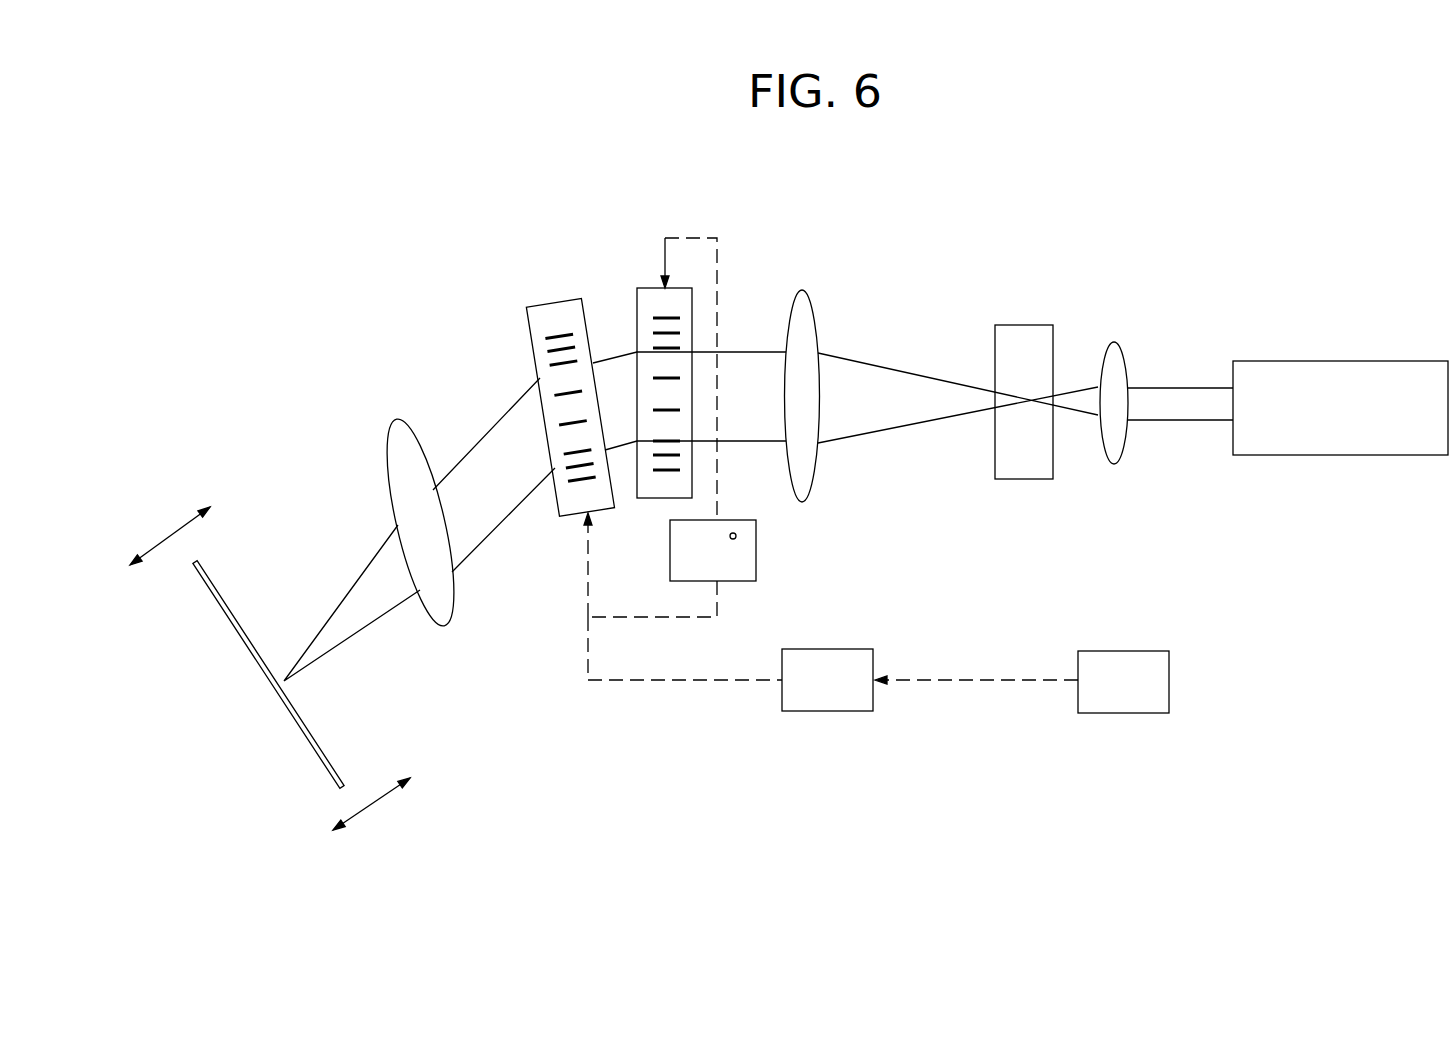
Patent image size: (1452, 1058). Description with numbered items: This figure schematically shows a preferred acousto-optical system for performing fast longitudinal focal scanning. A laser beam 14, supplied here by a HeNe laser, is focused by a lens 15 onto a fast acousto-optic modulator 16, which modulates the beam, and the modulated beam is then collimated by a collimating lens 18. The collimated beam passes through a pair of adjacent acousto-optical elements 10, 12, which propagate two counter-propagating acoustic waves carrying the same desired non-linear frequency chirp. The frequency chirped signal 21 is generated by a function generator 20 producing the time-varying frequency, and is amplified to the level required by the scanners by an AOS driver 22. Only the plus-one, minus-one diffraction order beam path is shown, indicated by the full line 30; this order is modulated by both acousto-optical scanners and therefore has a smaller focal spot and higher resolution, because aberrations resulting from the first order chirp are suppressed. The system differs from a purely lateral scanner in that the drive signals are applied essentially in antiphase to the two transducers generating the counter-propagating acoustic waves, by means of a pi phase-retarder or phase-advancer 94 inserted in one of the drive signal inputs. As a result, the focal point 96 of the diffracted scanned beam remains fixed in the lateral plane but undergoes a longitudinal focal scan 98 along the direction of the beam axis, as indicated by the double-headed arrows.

The acousto-optical element 10 is at (553, 298).
The acousto-optical element 12 is at (648, 283).
The laser beam 14 is at (1190, 378).
The lens 15 is at (1113, 347).
The acousto-optic modulator 16 is at (1018, 329).
The collimating lens 18 is at (795, 288).
The function generator 20 is at (1140, 651).
The frequency chirped signal 21 is at (968, 680).
The AOS driver 22 is at (822, 649).
The (+1, −1) order beam 30 is at (482, 546).
The phase-retarder or phase-advancer 94 is at (757, 548).
The focal point 96 is at (272, 683).
The longitudinal focal scan 98 is at (160, 545).